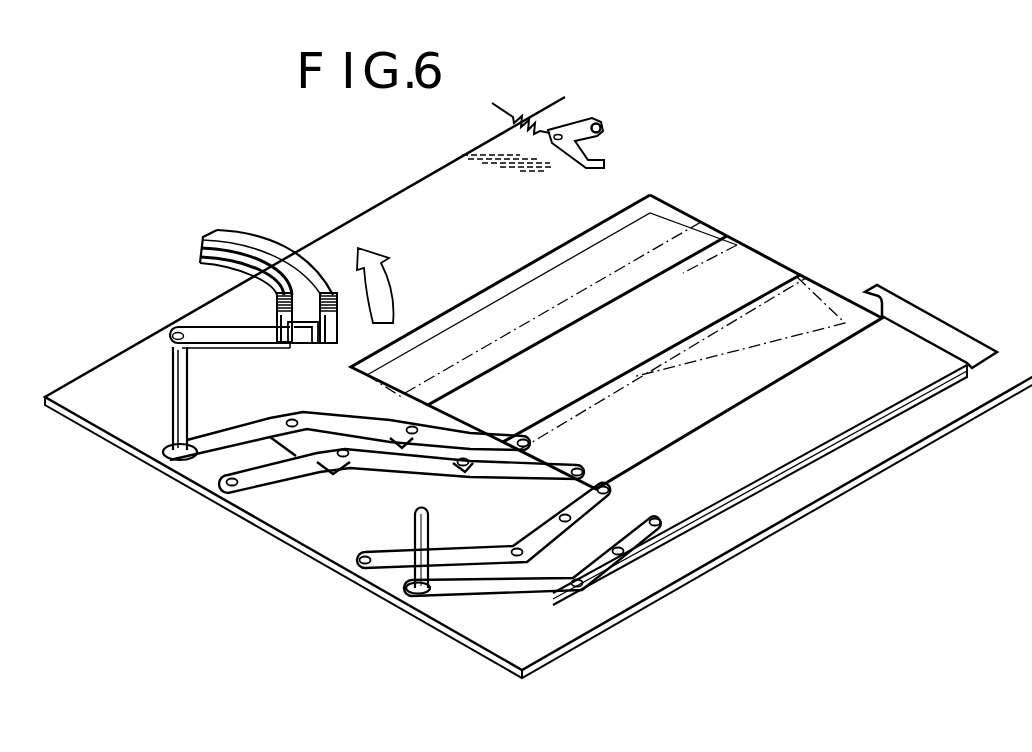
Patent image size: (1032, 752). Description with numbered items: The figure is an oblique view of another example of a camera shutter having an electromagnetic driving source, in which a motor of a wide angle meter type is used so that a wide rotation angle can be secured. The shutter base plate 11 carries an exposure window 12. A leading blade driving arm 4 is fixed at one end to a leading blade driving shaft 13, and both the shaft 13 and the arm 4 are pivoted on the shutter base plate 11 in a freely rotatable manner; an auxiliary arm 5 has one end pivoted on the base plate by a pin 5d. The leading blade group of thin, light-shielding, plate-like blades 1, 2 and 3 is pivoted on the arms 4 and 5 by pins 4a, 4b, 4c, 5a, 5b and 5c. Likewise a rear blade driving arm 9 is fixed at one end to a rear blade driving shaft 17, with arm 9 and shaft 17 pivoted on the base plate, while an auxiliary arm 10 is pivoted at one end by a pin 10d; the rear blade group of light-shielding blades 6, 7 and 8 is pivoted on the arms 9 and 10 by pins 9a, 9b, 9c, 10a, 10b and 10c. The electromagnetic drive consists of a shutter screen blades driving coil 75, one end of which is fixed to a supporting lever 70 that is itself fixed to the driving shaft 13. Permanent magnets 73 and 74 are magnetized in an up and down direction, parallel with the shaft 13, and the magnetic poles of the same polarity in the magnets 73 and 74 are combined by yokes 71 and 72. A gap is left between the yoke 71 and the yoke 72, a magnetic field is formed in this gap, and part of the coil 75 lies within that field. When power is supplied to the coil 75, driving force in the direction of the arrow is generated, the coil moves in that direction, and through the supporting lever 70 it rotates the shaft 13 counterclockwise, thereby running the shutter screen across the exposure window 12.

The leading blade 1 is at (667, 230).
The leading blade 2 is at (743, 277).
The leading blade 3 is at (803, 312).
The leading blade driving arm 4 is at (353, 418).
The pin 4a is at (287, 418).
The pin 4b is at (411, 426).
The pin 4c is at (522, 438).
The auxiliary arm 5 is at (373, 460).
The pin 5a is at (343, 460).
The pin 5b is at (462, 469).
The pin 5c is at (577, 465).
The pin 5d is at (231, 490).
The rear blade 6 is at (807, 450).
The rear blade 7 is at (643, 550).
The rear blade 8 is at (603, 580).
The rear blade driving arm 9 is at (512, 590).
The pin 9a is at (572, 600).
The pin 9b is at (618, 556).
The pin 9c is at (655, 520).
The auxiliary arm 10 is at (477, 550).
The pin 10a is at (524, 554).
The pin 10b is at (572, 519).
The pin 10c is at (611, 490).
The pin 10d is at (360, 570).
The shutter base plate 11 is at (275, 500).
The exposure window 12 is at (515, 285).
The leading blade driving shaft 13 is at (177, 382).
The rear blade driving shaft 17 is at (418, 523).
The supporting lever 70 is at (200, 330).
The yoke 71 is at (215, 231).
The yoke 72 is at (205, 268).
The permanent magnet 73 is at (201, 249).
The permanent magnet 74 is at (290, 345).
The shutter screen blades driving coil 75 is at (325, 290).